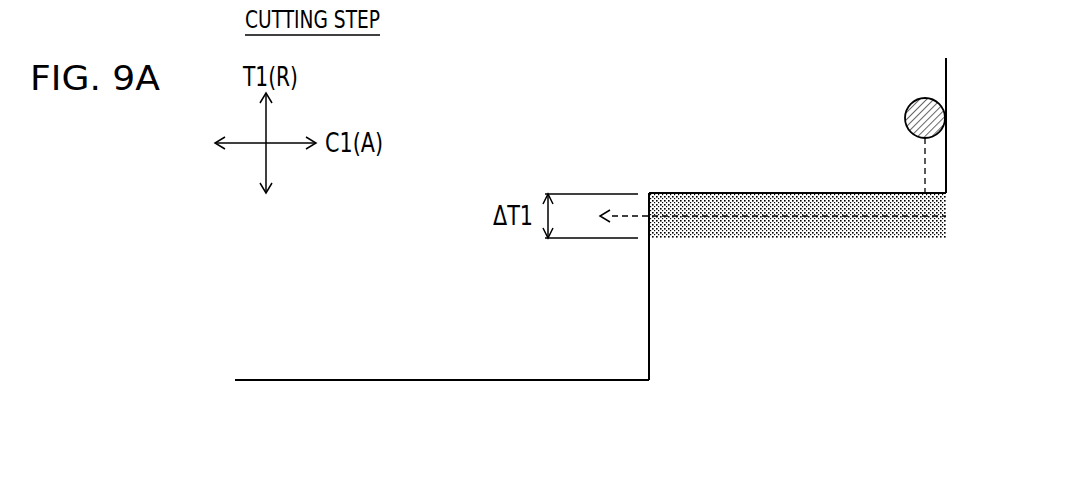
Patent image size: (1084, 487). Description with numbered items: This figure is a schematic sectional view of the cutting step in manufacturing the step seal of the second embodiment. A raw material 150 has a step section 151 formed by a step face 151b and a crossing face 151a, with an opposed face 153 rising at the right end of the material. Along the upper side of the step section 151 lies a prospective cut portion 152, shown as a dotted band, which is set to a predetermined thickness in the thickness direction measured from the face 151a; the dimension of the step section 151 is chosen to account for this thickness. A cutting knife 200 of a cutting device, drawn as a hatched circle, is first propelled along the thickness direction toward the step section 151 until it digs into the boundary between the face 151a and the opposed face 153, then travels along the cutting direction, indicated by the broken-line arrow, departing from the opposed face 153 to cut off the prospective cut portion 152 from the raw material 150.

The raw material 150 is at (797, 82).
The step section 151 is at (803, 315).
The step face 151a is at (792, 193).
The step face 151b is at (648, 290).
The prospective cut portion 152 is at (730, 208).
The opposed face 153 is at (945, 79).
The cutting knife 200 is at (905, 115).